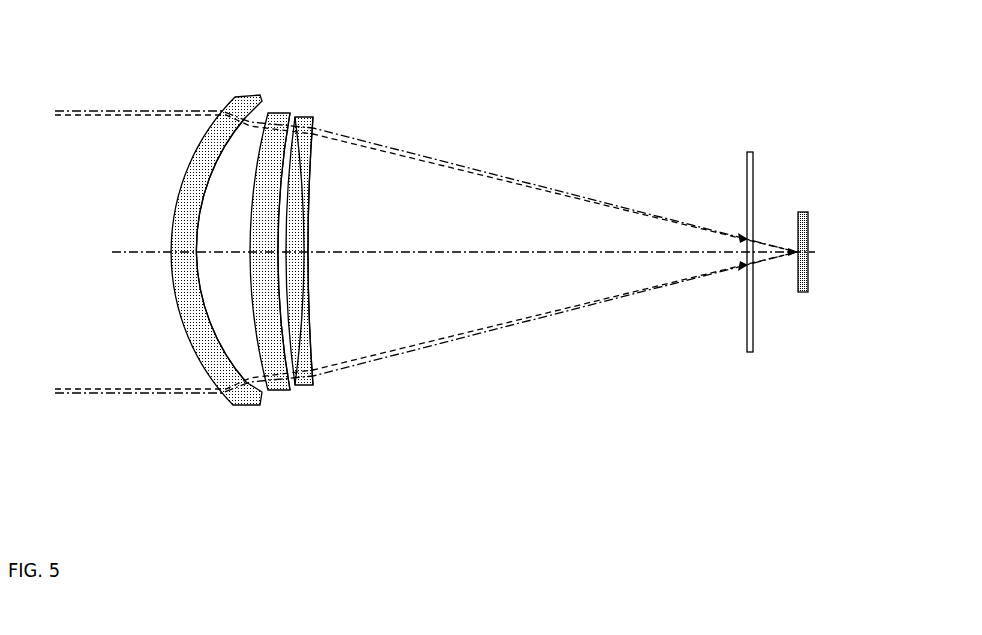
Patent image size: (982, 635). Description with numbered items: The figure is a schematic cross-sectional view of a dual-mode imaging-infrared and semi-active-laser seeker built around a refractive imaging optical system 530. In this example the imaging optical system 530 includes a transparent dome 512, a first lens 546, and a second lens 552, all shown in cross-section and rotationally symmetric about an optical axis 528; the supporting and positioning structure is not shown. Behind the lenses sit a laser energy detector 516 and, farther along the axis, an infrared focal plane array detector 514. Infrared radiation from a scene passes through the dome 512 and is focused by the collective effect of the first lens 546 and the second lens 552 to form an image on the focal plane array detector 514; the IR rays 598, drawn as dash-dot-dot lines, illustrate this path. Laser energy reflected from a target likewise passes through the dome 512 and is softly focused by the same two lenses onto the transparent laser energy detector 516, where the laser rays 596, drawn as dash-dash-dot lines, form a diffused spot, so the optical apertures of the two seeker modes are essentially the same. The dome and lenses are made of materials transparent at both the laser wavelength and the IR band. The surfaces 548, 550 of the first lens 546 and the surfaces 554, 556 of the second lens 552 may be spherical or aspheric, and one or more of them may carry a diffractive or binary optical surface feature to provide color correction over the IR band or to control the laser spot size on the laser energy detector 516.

The transparent dome 512 is at (239, 95).
The infrared focal plane array detector 514 is at (809, 230).
The laser energy detector 516 is at (754, 172).
The optical axis 528 is at (140, 252).
The imaging optical system 530 is at (441, 65).
The first lens 546 is at (279, 112).
The surface of the first lens 548 is at (254, 365).
The surface of the first lens 550 is at (298, 363).
The second lens 552 is at (309, 117).
The surface of the second lens 554 is at (272, 277).
The surface of the second lens 556 is at (316, 277).
The laser rays 596 is at (128, 116).
The IR rays 598 is at (107, 110).